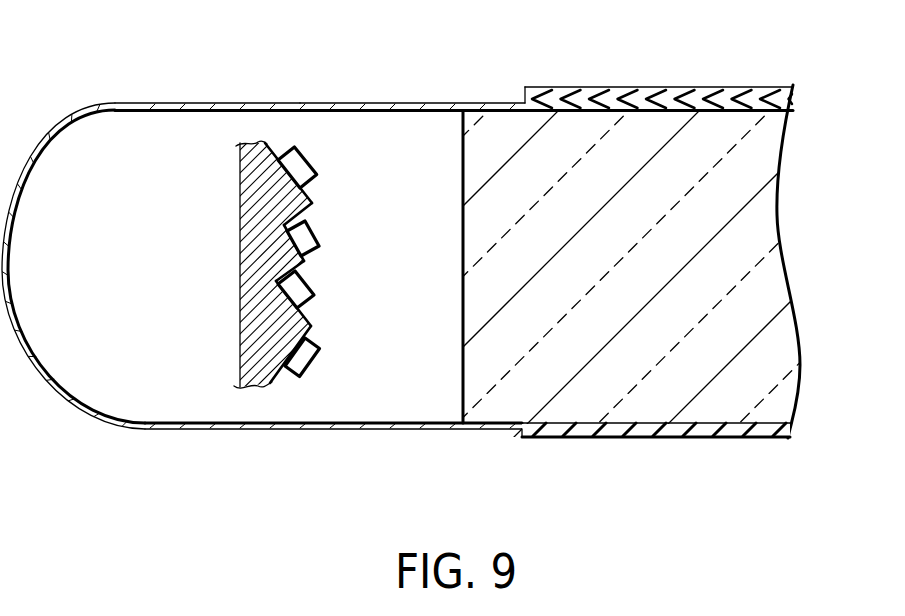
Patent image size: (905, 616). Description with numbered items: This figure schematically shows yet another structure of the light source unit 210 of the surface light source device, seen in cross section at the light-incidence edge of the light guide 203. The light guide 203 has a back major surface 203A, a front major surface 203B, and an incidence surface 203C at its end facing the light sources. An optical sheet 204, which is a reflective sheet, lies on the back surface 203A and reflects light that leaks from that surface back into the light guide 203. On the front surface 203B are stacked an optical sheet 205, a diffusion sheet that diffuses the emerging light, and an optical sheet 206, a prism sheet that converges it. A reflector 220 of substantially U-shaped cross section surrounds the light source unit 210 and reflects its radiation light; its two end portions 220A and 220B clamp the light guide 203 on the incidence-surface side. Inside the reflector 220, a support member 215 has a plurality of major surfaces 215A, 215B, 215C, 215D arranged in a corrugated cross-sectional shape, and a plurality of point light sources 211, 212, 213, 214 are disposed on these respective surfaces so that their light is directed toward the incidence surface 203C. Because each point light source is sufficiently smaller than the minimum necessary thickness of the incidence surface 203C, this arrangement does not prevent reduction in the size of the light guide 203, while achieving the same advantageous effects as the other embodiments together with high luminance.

The light guide 203 is at (750, 216).
The major surface (back surface) of the light guide 203A is at (640, 440).
The major surface (front surface) of the light guide 203B is at (680, 92).
The incidence surface 203C is at (461, 386).
The optical sheet 204 is at (733, 439).
The optical sheet 205 is at (787, 113).
The optical sheet 206 is at (795, 92).
The light source unit 210 is at (212, 392).
The point light source 211 is at (319, 179).
The point light source 212 is at (320, 248).
The point light source 213 is at (311, 279).
The point light source 214 is at (316, 370).
The support member 215 is at (240, 258).
The major surface of the support member 215A is at (267, 145).
The major surface of the support member 215B is at (302, 220).
The major surface of the support member 215C is at (306, 315).
The major surface of the support member 215D is at (302, 338).
The reflector 220 is at (172, 101).
The end portion of the reflector 220A is at (493, 433).
The end portion of the reflector 220B is at (481, 101).